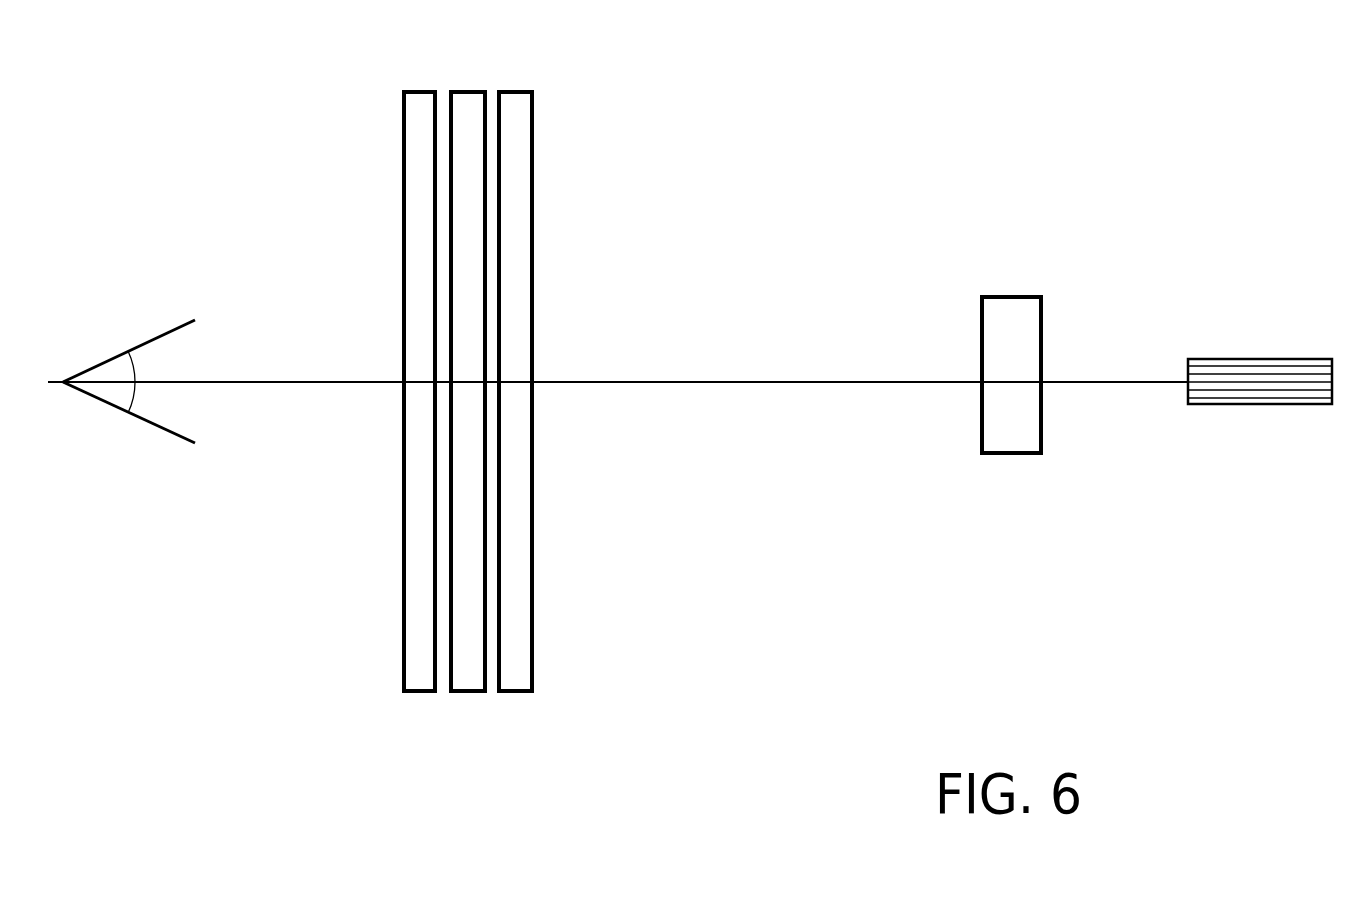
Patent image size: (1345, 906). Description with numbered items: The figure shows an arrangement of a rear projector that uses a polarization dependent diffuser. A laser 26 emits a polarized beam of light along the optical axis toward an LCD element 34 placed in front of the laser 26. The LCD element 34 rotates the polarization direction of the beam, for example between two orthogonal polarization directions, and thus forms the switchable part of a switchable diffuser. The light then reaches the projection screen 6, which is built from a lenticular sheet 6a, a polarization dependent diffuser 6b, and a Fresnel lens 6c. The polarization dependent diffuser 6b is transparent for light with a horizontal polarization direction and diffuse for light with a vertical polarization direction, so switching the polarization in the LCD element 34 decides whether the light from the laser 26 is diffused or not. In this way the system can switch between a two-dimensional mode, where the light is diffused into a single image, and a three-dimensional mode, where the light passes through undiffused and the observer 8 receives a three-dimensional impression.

The projection screen 6 is at (468, 389).
The lenticular sheet 6a is at (413, 695).
The polarization dependent diffuser 6b is at (470, 695).
The Fresnel lens 6c is at (523, 695).
The observer 8 is at (165, 333).
The LCD element 34 is at (1025, 295).
The laser 26 is at (1285, 358).